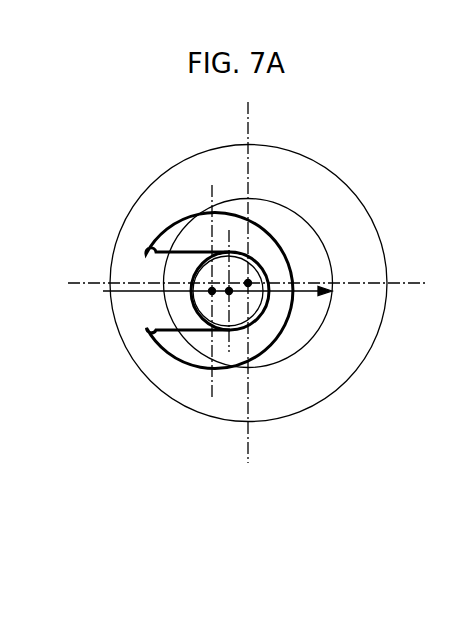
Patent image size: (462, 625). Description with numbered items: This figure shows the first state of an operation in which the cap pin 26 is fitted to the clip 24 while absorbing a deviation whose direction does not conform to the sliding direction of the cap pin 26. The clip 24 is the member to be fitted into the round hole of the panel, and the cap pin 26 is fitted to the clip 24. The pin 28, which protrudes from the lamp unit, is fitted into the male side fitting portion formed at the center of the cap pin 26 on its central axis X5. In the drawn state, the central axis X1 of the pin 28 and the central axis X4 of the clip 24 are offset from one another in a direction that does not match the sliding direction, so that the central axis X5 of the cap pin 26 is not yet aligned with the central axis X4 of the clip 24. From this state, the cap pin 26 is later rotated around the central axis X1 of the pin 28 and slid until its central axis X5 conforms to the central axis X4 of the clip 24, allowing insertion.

The clip 24 is at (292, 150).
The cap pin 26 is at (275, 240).
The pin 28 is at (193, 275).
The central axis of the pin X1 is at (229, 291).
The central axis of the clip X4 is at (248, 283).
The central axis of the cap pin X5 is at (212, 291).